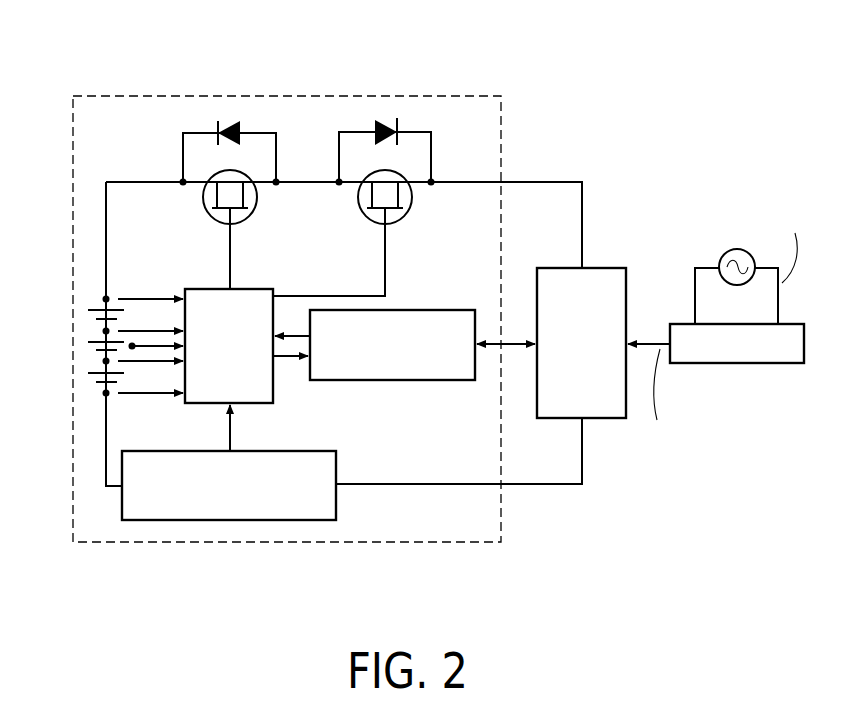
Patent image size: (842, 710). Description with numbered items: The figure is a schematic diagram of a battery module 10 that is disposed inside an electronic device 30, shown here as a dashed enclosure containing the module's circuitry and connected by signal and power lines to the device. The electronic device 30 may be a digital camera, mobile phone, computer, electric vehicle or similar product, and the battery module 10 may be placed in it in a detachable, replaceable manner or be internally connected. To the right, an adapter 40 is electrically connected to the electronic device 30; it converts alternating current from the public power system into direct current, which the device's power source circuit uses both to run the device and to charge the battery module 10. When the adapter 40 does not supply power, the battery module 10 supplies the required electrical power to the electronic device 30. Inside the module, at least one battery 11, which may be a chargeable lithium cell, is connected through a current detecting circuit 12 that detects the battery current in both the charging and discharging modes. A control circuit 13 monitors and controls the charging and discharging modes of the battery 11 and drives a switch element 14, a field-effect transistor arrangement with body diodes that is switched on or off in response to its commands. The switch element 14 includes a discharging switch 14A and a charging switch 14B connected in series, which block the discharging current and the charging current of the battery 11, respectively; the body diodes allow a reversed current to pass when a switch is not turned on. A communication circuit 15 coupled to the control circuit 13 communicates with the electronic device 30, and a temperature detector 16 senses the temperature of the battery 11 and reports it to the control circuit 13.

The battery module 10 is at (135, 95).
The battery 11 is at (98, 305).
The current detecting circuit 12 is at (230, 522).
The control circuit 13 is at (192, 288).
The switch element 14 is at (307, 207).
The discharging switch 14A is at (257, 206).
The charging switch 14B is at (358, 206).
The communication circuit 15 is at (437, 308).
The temperature detector 16 is at (132, 345).
The electronic device 30 is at (612, 268).
The adapter 40 is at (738, 364).